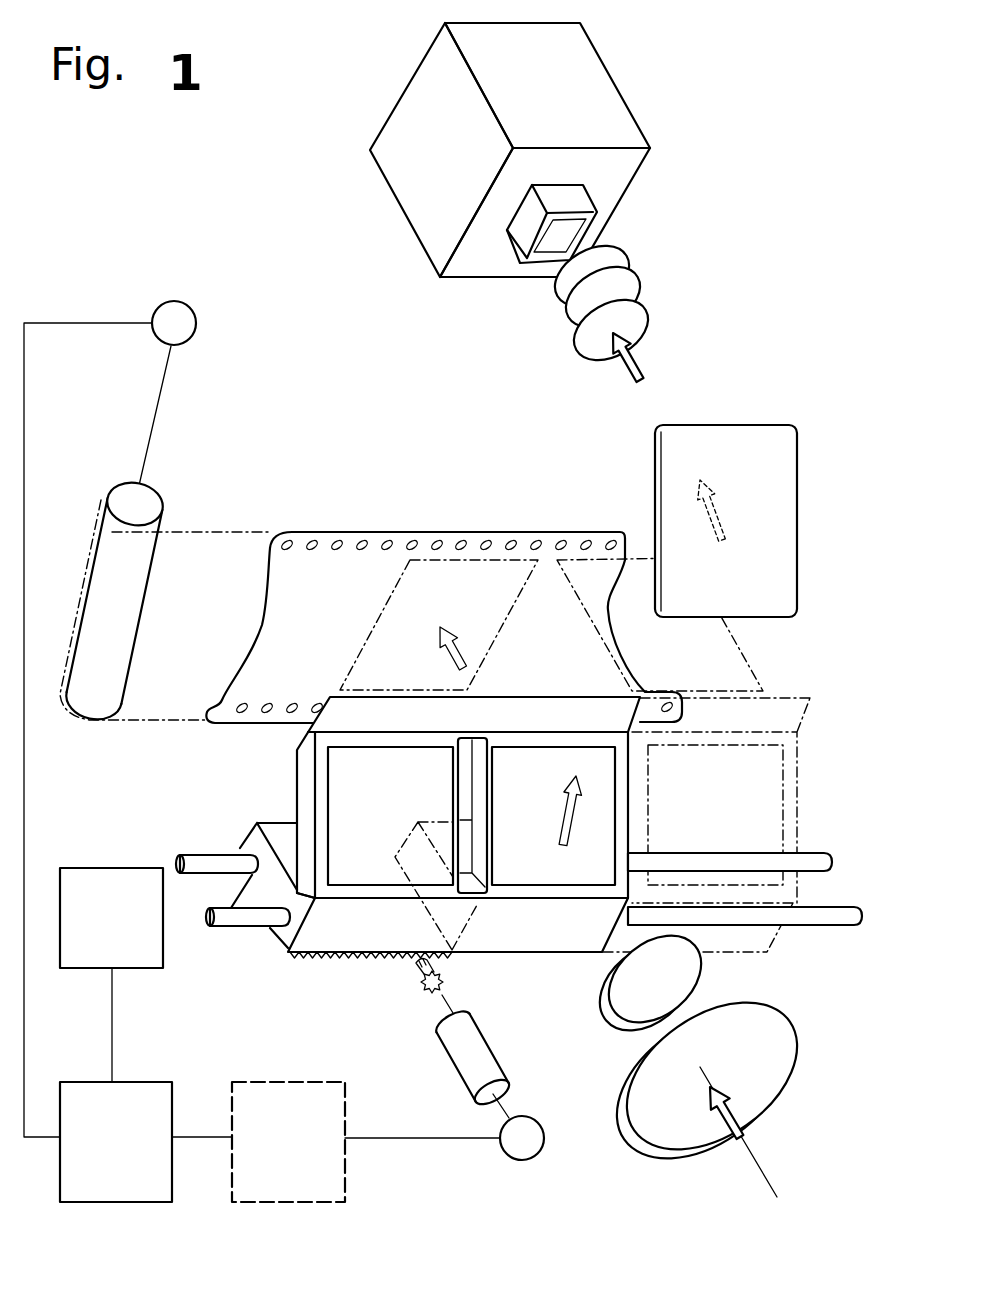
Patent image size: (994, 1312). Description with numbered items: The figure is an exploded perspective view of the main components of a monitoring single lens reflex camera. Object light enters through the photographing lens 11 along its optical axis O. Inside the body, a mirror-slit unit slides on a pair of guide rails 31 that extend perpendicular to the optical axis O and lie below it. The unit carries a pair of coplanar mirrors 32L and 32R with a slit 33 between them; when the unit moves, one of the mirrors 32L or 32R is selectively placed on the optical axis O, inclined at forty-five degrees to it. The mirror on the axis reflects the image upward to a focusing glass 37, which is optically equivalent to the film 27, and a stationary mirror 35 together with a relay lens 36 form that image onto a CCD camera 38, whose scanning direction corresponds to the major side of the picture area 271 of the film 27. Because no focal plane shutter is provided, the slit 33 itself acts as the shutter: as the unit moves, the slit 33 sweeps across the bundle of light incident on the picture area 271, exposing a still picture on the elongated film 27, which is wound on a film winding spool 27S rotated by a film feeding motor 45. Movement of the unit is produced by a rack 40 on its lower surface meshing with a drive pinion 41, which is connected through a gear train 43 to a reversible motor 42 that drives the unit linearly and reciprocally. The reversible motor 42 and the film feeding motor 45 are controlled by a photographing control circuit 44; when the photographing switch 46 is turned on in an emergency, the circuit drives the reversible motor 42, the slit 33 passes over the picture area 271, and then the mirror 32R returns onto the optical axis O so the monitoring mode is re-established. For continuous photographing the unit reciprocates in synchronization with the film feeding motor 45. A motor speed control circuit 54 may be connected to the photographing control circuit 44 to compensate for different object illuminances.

The CCD camera 38 is at (625, 135).
The relay lens 36 is at (617, 266).
The film feeding motor 45 is at (196, 322).
The film winding spool 27S is at (153, 502).
The film 27 is at (343, 575).
The picture area 271 is at (468, 575).
The focusing glass 37 is at (723, 660).
The stationary mirror 35 is at (783, 497).
The mirror 32L is at (377, 867).
The slit 33 is at (472, 780).
The mirror 32R is at (753, 807).
The guide rails 31 is at (232, 915).
The rack 40 is at (327, 954).
The drive pinion 41 is at (420, 988).
The gear train 43 is at (463, 1072).
The reversible motor 42 is at (532, 1157).
The photographing lens 11 is at (750, 1040).
The optical axis O is at (762, 1163).
The photographing switch 46 is at (163, 950).
The photographing control circuit 44 is at (163, 1085).
The motor speed control circuit 54 is at (342, 1093).